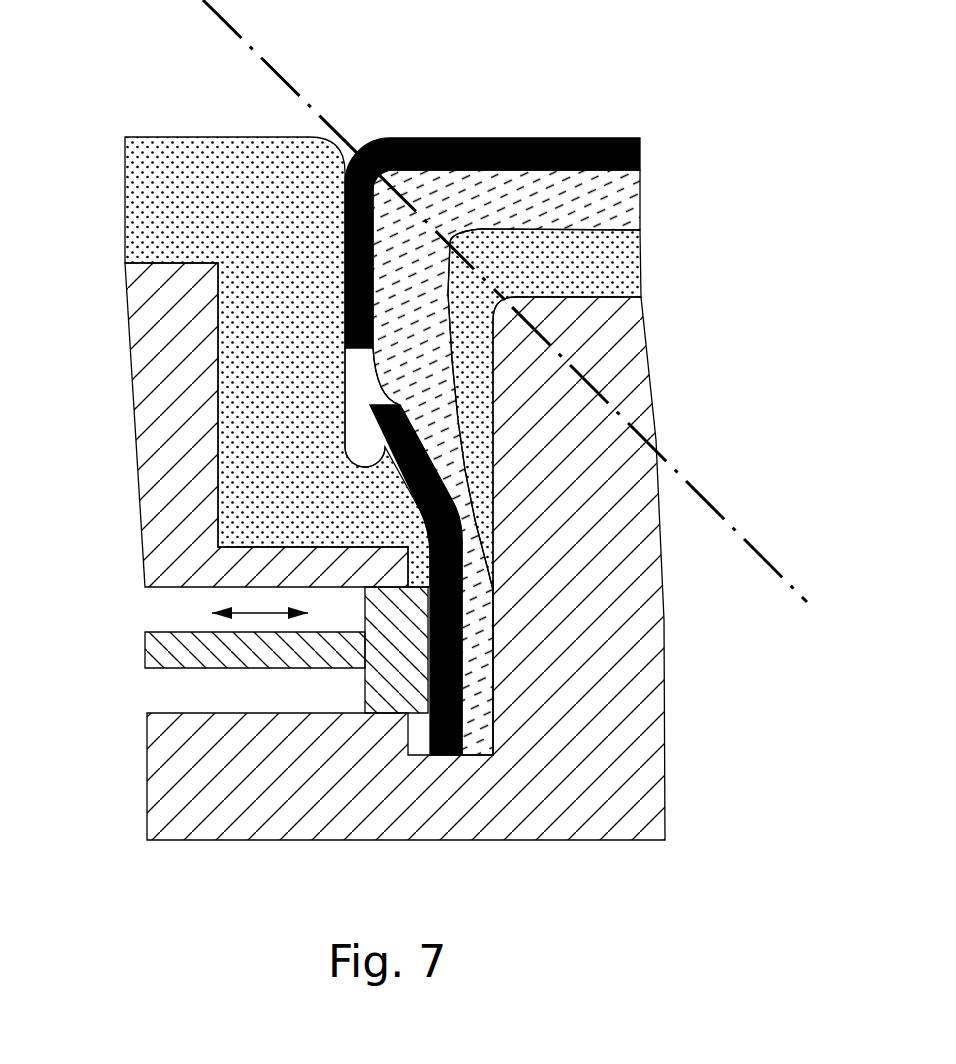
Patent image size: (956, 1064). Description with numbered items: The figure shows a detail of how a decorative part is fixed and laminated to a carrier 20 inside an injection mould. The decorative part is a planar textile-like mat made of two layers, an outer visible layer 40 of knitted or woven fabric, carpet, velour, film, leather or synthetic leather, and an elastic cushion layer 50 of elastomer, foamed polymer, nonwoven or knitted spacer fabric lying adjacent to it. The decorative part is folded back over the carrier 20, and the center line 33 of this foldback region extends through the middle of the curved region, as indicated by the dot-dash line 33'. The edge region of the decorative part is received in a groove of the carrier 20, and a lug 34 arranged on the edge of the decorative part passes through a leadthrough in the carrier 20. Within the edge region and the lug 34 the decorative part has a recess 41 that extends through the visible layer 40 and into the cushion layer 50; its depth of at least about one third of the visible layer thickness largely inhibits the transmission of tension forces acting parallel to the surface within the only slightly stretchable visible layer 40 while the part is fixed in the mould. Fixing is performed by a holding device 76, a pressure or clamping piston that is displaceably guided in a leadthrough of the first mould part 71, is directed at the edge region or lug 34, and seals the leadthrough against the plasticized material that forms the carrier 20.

The carrier 20 is at (258, 222).
The center line 33 is at (354, 150).
The dot-dash line 33' is at (662, 451).
The lug 34 is at (520, 672).
The visible layer 40 is at (640, 150).
The recess 41 is at (352, 387).
The cushion layer 50 is at (582, 216).
The first mould part 71 is at (612, 582).
The holding device 76 is at (414, 666).